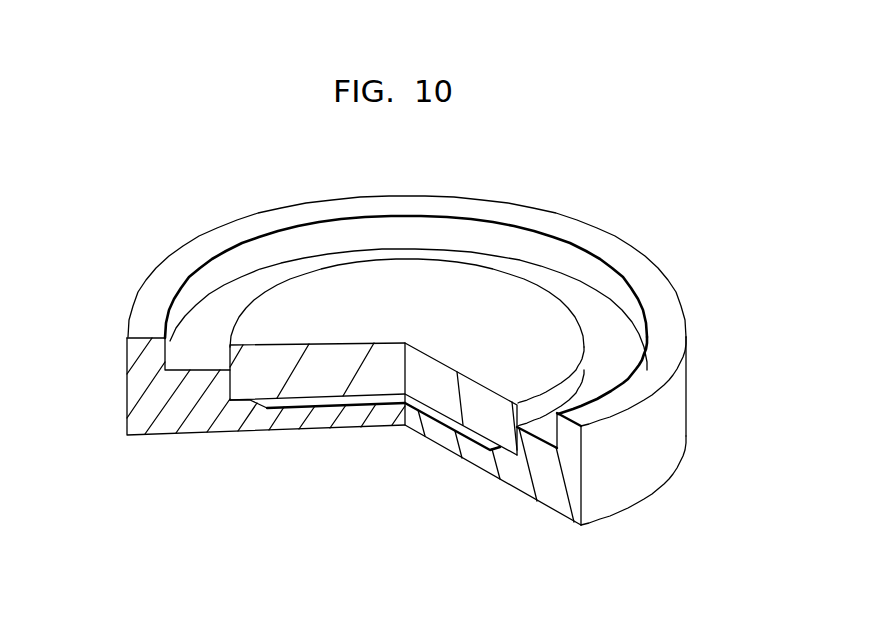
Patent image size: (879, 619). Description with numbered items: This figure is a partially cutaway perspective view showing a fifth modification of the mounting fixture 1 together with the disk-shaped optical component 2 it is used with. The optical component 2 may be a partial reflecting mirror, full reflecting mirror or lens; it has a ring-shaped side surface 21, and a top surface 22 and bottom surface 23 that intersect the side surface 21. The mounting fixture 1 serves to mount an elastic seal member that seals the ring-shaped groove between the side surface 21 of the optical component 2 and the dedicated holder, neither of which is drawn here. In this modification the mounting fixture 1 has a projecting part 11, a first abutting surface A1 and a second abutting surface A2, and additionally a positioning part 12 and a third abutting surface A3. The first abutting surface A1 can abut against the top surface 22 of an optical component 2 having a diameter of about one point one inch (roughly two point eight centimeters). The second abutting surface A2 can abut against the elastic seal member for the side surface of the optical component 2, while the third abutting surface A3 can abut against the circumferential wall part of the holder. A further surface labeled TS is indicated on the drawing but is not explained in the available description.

The mounting fixture 1 is at (146, 242).
The optical component 2 is at (460, 287).
The projecting part 11 is at (566, 434).
The positioning part 12 is at (562, 424).
The side surface 21 is at (582, 401).
The top surface 22 is at (352, 410).
The bottom surface 23 is at (350, 343).
The first abutting surface A1 is at (256, 399).
The second abutting surface A2 is at (192, 368).
The third abutting surface A3 is at (131, 338).
The top surface TS is at (630, 247).